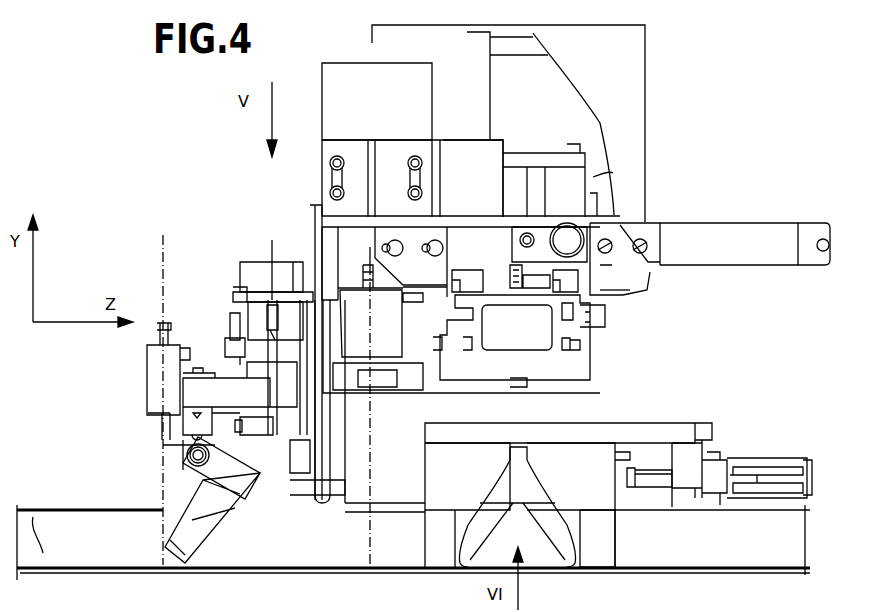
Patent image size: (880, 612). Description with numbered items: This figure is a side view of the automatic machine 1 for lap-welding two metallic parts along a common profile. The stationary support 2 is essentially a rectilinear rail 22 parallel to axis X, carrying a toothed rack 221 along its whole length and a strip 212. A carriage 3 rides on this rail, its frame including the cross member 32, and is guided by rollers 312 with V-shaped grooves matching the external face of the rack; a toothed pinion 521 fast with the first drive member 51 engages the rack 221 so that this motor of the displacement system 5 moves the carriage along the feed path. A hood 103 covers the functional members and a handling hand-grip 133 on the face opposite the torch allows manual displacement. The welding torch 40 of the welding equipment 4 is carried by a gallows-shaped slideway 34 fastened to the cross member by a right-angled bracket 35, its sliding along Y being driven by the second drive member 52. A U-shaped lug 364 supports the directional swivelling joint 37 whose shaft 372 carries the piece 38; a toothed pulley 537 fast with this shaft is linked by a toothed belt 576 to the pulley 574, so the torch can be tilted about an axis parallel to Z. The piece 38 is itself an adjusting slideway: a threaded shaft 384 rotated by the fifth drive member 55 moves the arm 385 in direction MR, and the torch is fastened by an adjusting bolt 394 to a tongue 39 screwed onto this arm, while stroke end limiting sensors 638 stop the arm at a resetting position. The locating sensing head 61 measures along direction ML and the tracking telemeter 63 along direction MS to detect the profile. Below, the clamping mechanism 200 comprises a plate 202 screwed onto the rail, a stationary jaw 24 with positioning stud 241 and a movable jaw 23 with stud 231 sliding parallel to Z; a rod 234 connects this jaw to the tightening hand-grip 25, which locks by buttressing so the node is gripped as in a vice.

The automatic machine 1 is at (140, 250).
The support 2 is at (773, 400).
The carriage 3 is at (693, 95).
The welding equipment 4 is at (107, 442).
The displacement system 5 is at (250, 203).
The rail 22 is at (580, 360).
The movable jaw 23 is at (592, 483).
The stationary jaw 24 is at (485, 483).
The tightening hand-grip 25 is at (812, 482).
The cross member 32 is at (648, 216).
The slideway with columns 34 is at (338, 107).
The screwed right-angled bracket 35 is at (350, 180).
The directional swivelling joint 37 is at (280, 477).
The piece 38 is at (233, 290).
The tongue 39 is at (167, 421).
The torch 40 is at (203, 503).
The first drive member 51 is at (600, 175).
The second drive member 52 is at (417, 383).
The fifth drive member 55 is at (250, 277).
The sensing head 61 is at (355, 400).
The tracking telemeter 63 is at (157, 388).
The hood 103 is at (622, 72).
The handling hand-grip 133 is at (772, 233).
The mechanism or tong 200 is at (623, 522).
The plate 202 is at (677, 400).
The strip 212 is at (473, 278).
The toothed rack 221 is at (600, 290).
The stud 231 is at (605, 552).
The rod 234 is at (653, 482).
The cylindrical positioning stud 241 is at (430, 552).
The roller 312 is at (455, 290).
The lug 364 is at (345, 497).
The shaft 372 is at (384, 310).
The threaded shaft 384 is at (267, 315).
The arm 385 is at (245, 370).
The adjusting bolt 394 is at (167, 452).
The toothed pinion 521 is at (517, 327).
The toothed pulley 537 is at (307, 497).
The pulley 574 is at (313, 208).
The toothed belt 576 is at (317, 248).
The stroke end limiting sensors 638 is at (227, 337).